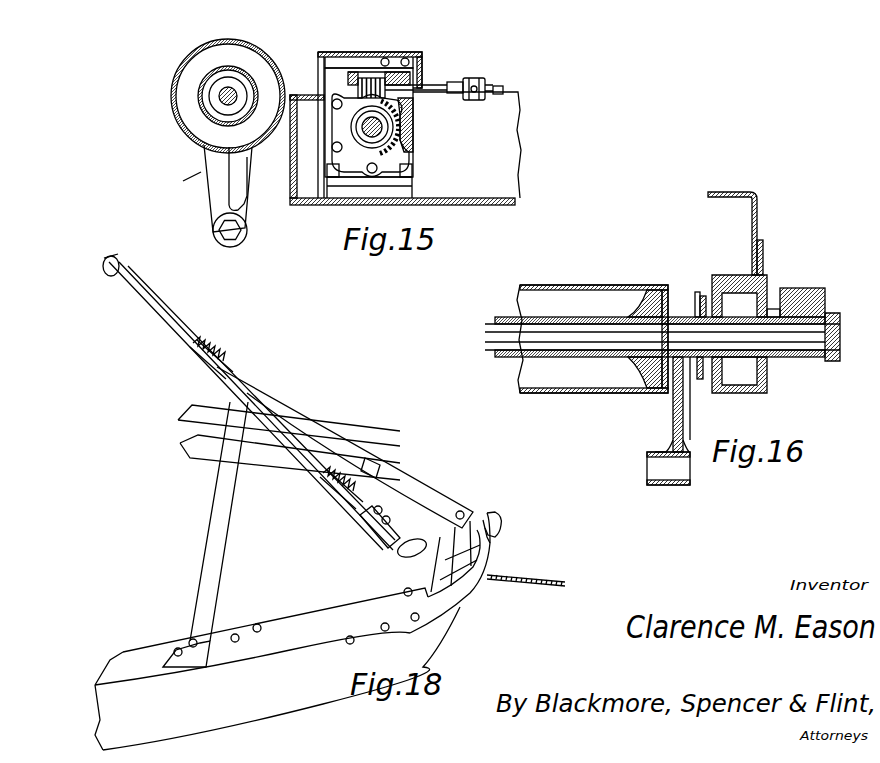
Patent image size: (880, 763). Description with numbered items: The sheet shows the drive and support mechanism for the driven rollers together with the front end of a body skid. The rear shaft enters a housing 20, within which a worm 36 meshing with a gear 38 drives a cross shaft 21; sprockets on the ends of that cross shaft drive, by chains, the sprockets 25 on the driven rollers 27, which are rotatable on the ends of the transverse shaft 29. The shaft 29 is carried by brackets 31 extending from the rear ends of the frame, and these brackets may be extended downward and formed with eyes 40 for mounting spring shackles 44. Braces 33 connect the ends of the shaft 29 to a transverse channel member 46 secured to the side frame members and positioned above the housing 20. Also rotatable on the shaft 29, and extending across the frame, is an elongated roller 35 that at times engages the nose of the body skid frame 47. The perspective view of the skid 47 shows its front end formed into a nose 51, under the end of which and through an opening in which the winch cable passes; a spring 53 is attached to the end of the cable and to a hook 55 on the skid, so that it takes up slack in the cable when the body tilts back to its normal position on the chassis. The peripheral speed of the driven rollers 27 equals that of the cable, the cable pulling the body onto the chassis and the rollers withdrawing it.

In FIG. 15, the housing 20 is at (333, 78).
In FIG. 15, the cross shaft 21 is at (380, 128).
In FIG. 16, the sprockets 25 is at (704, 384).
In FIG. 16, the driven rollers 27 is at (768, 388).
In FIG. 15, the shaft 29 is at (232, 68).
In FIG. 16, the shaft 29 is at (594, 365).
In FIG. 15, the brackets 31 is at (240, 205).
In FIG. 16, the brackets 31 is at (673, 313).
In FIG. 15, the braces 33 is at (418, 54).
In FIG. 16, the braces 33 is at (800, 288).
In FIG. 15, the elongated roller 35 is at (178, 62).
In FIG. 16, the elongated roller 35 is at (610, 285).
In FIG. 15, the worm 36 is at (366, 86).
In FIG. 15, the gear 38 is at (400, 113).
In FIG. 16, the eyes 40 is at (654, 470).
In FIG. 15, the spring shackles 44 is at (183, 181).
In FIG. 15, the transverse channel member 46 is at (470, 86).
In FIG. 16, the skid 47 is at (763, 256).
In FIG. 18, the skid 47 is at (305, 680).
In FIG. 18, the nose 51 is at (503, 527).
In FIG. 18, the spring 53 is at (347, 497).
In FIG. 18, the hook 55 is at (112, 277).